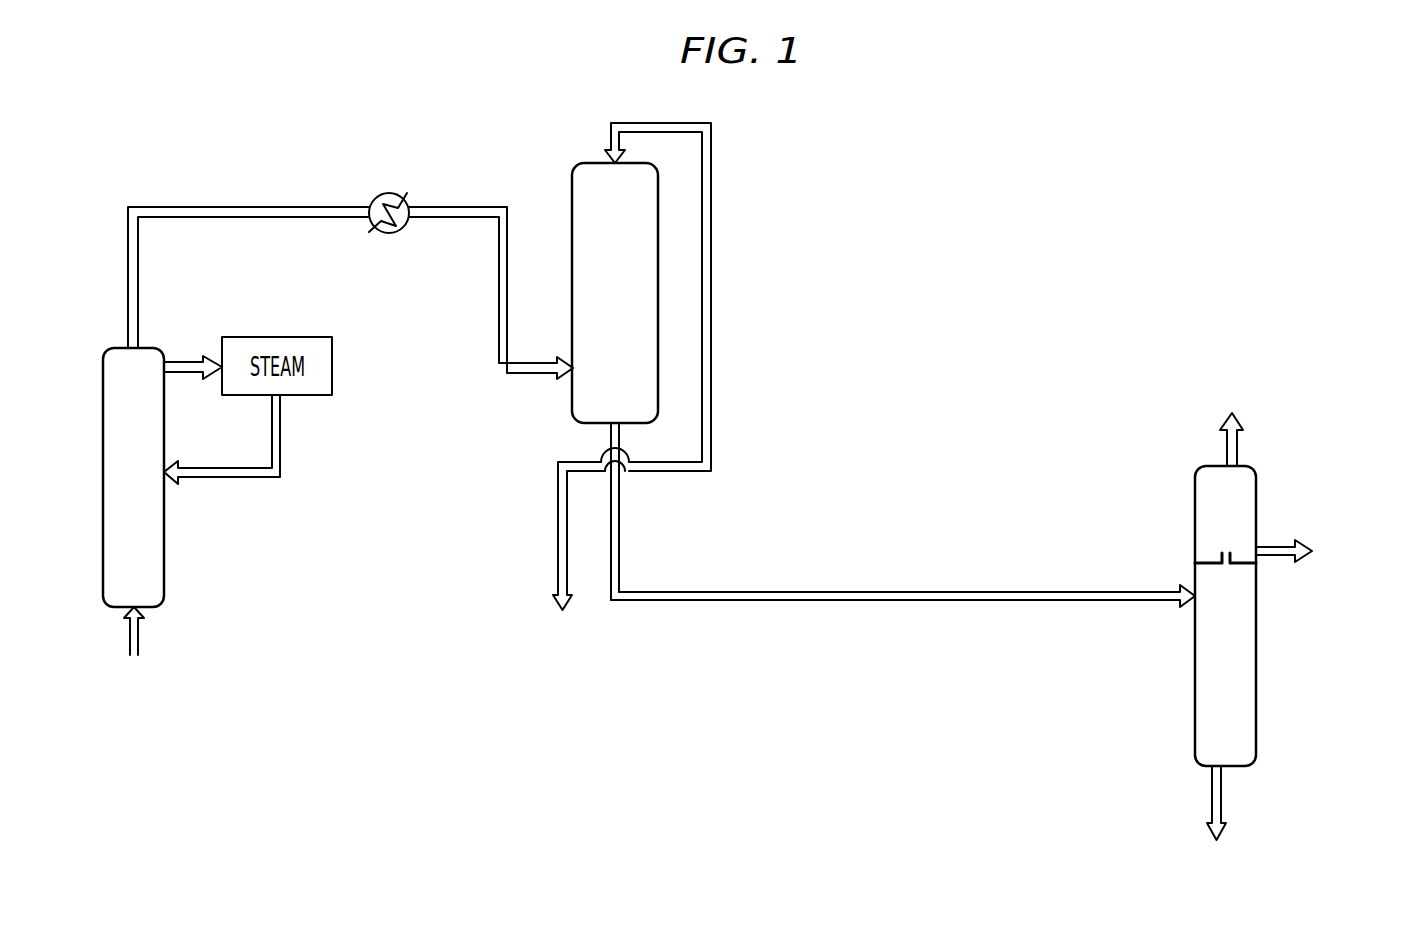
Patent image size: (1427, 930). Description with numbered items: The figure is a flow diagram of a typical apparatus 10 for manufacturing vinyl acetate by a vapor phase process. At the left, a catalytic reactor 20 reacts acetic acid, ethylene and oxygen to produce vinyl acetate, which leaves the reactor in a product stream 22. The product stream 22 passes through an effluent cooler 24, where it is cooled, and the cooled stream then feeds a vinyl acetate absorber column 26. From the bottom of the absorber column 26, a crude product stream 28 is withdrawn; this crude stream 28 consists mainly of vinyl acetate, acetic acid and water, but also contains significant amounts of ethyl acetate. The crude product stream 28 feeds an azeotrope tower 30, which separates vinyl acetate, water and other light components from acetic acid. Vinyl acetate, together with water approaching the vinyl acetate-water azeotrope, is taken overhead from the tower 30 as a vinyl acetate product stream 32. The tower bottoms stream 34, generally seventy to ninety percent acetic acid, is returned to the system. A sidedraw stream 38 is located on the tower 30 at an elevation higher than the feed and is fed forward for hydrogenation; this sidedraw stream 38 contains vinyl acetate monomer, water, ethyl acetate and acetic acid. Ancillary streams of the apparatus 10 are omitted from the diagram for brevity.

The apparatus 10 is at (550, 804).
The catalytic reactor 20 is at (103, 388).
The product stream 22 is at (240, 212).
The effluent cooler 24 is at (377, 199).
The vinyl acetate absorber column 26 is at (626, 307).
The crude product stream 28 is at (760, 592).
The azeotrope tower 30 is at (1195, 695).
The vinyl acetate product stream 32 is at (1226, 447).
The tower bottoms stream 34 is at (1222, 795).
The sidedraw stream 38 is at (1268, 545).